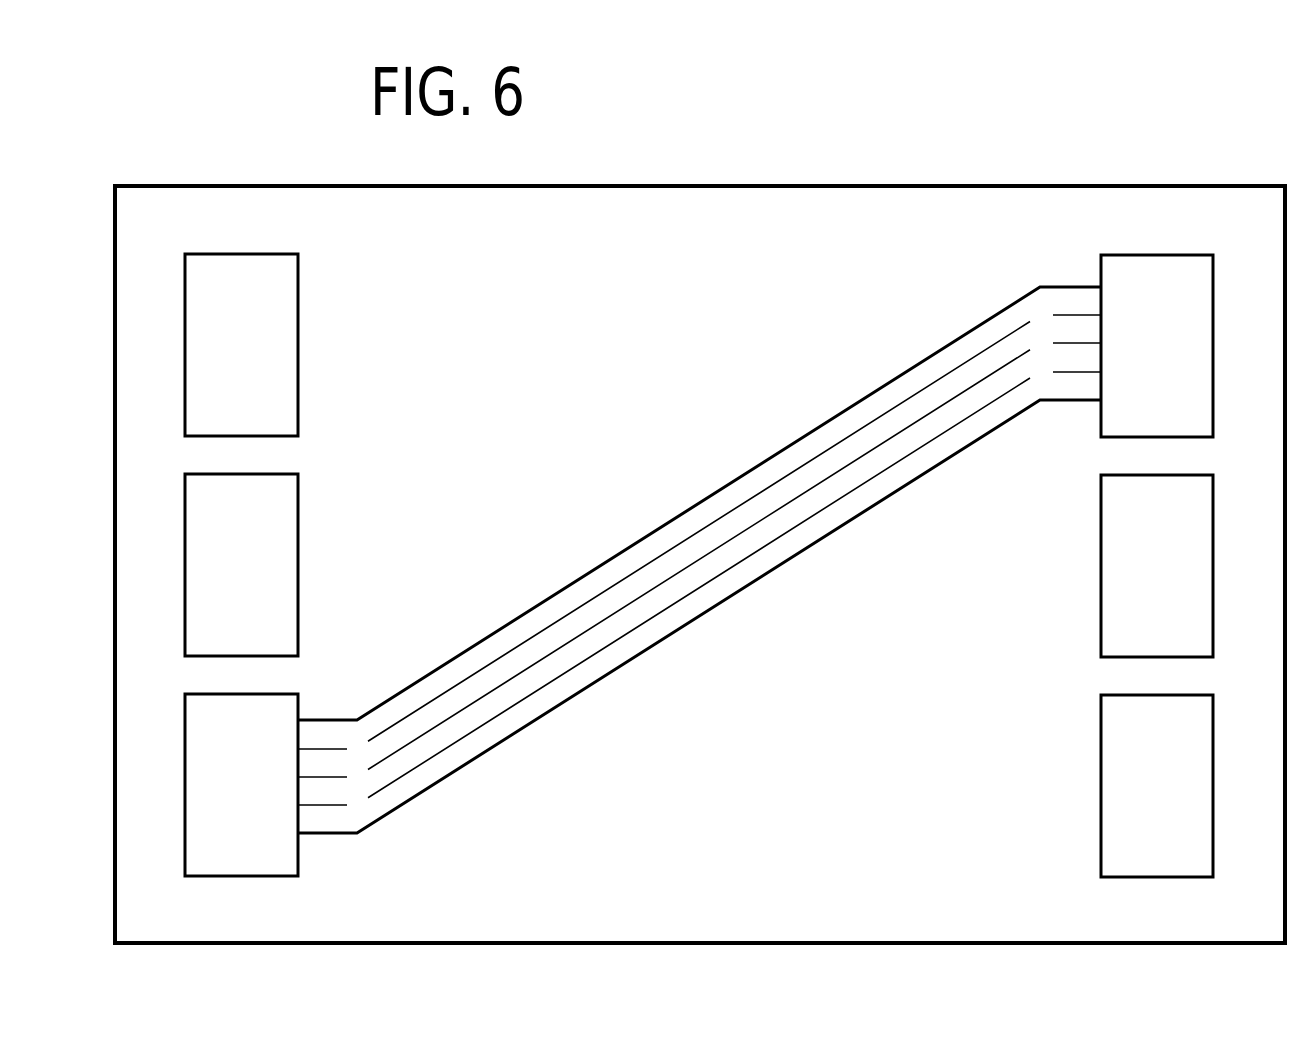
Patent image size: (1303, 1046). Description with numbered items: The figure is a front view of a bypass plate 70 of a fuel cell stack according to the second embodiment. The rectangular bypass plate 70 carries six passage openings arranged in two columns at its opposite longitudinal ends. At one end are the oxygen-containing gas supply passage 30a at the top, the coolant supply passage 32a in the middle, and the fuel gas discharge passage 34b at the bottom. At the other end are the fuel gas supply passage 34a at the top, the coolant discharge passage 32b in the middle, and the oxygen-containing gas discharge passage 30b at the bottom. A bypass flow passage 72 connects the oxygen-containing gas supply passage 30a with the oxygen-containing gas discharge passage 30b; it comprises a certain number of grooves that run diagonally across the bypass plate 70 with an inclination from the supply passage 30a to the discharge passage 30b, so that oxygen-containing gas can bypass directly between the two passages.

The bypass plate 70 is at (1117, 160).
The bypass flow passage 72 is at (700, 501).
The oxygen-containing gas supply passage 30a is at (1157, 346).
The oxygen-containing gas discharge passage 30b is at (241, 785).
The coolant supply passage 32a is at (1157, 566).
The coolant discharge passage 32b is at (241, 565).
The fuel gas supply passage 34a is at (241, 345).
The fuel gas discharge passage 34b is at (1157, 786).